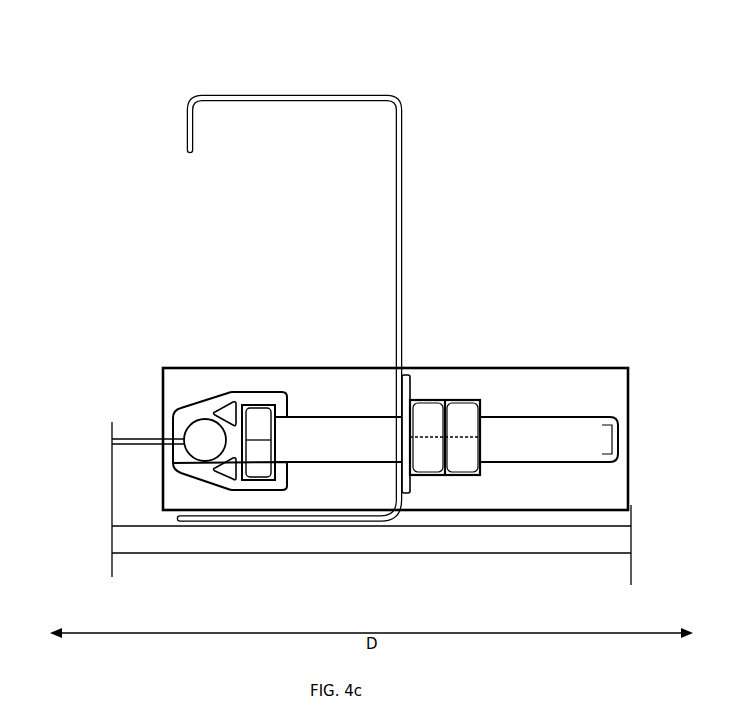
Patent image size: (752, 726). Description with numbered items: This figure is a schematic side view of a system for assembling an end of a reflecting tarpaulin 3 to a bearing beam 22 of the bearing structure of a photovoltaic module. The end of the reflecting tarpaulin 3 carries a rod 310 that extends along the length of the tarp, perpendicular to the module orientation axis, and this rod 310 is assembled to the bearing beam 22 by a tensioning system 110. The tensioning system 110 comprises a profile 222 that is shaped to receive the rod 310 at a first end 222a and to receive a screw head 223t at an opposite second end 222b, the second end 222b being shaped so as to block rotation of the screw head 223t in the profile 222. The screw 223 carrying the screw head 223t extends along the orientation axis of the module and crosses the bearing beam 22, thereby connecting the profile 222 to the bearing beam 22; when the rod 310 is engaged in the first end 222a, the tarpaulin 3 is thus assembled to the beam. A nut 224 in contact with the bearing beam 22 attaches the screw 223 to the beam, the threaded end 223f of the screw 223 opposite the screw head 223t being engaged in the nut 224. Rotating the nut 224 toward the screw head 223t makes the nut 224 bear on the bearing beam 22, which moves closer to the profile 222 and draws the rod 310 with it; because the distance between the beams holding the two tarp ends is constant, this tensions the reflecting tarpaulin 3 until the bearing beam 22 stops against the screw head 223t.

The bearing beam 22 is at (288, 96).
The reflecting tarpaulin 3 is at (138, 433).
The profile 222 is at (202, 461).
The first end of the profile 222a is at (177, 415).
The second end of the profile 222b is at (228, 392).
The rod 310 is at (207, 447).
The screw 223 is at (442, 507).
The screw head 223t is at (263, 455).
The end of the screw 223f is at (598, 452).
The nut 224 is at (445, 400).
The tensioning system 110 is at (535, 511).